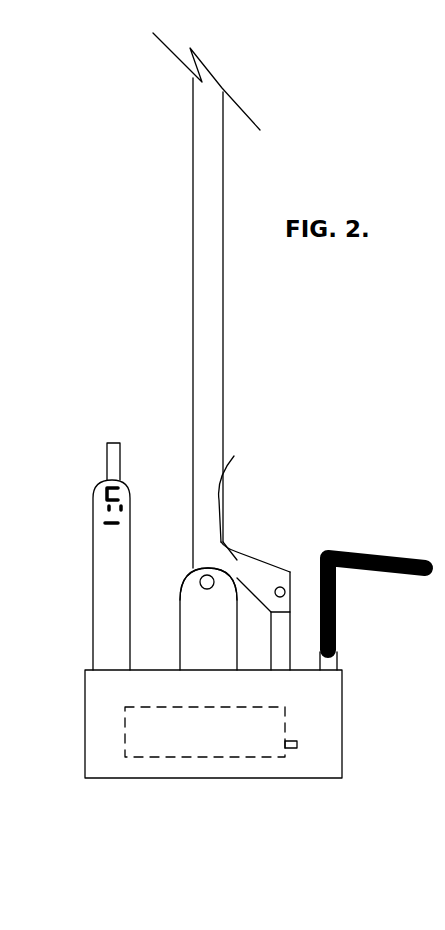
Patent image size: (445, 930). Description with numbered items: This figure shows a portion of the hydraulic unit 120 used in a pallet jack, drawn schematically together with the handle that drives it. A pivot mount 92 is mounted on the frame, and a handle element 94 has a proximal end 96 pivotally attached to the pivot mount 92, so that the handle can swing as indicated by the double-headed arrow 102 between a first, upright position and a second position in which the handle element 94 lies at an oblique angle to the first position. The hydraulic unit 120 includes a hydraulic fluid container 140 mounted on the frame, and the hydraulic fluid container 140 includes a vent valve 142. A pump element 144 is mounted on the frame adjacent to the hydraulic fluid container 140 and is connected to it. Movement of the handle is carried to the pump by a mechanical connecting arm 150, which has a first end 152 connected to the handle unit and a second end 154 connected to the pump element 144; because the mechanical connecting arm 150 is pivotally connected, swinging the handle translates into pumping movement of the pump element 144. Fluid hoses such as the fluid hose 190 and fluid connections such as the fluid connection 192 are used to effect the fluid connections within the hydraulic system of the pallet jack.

The handle element 94 is at (232, 311).
The double-headed arrow 102 is at (275, 353).
The first end 152 is at (234, 456).
The mechanical connecting arm 150 is at (238, 557).
The proximal end 96 is at (203, 557).
The second end 154 is at (281, 578).
The fluid hose 190 is at (383, 543).
The fluid connection 192 is at (350, 663).
The hydraulic unit 120 is at (66, 705).
The pivot mount 92 is at (202, 645).
The pump element 144 is at (303, 680).
The hydraulic fluid container 140 is at (200, 752).
The vent valve 142 is at (298, 748).